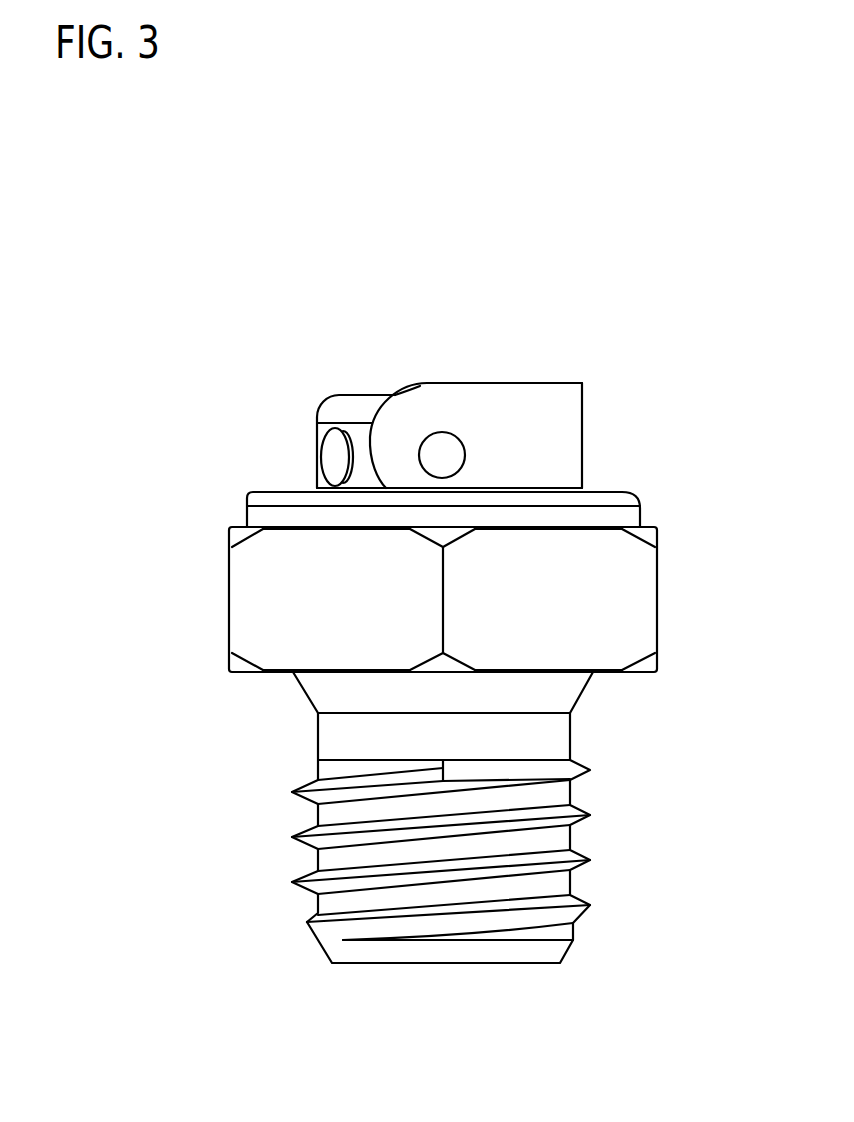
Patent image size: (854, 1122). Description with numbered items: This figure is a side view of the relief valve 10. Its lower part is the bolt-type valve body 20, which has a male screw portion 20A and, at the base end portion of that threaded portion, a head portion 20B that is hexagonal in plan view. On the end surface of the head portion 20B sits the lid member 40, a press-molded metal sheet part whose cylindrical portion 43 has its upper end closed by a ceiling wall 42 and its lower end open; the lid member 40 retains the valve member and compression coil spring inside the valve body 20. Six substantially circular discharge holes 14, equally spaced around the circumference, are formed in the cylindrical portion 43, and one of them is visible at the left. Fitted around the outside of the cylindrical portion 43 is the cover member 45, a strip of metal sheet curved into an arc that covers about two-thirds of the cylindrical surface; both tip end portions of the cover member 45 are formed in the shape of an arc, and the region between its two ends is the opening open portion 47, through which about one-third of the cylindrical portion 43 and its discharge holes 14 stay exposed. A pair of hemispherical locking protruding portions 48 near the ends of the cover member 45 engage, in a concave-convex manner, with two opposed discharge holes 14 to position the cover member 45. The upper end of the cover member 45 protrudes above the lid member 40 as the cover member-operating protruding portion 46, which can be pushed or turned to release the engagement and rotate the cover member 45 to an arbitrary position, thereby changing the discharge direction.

The relief valve 10 is at (671, 299).
The valve body 20 is at (658, 568).
The male screw portion 20A is at (580, 813).
The head portion 20B is at (643, 615).
The lid member 40 is at (320, 408).
The ceiling wall 42 is at (358, 393).
The cylindrical portion 43 is at (315, 432).
The discharge holes 14 is at (332, 448).
The cover member 45 is at (565, 382).
The cover member-operating protruding portion 46 is at (480, 397).
The opening open portion 47 is at (372, 440).
The locking protruding portions 48 is at (457, 458).